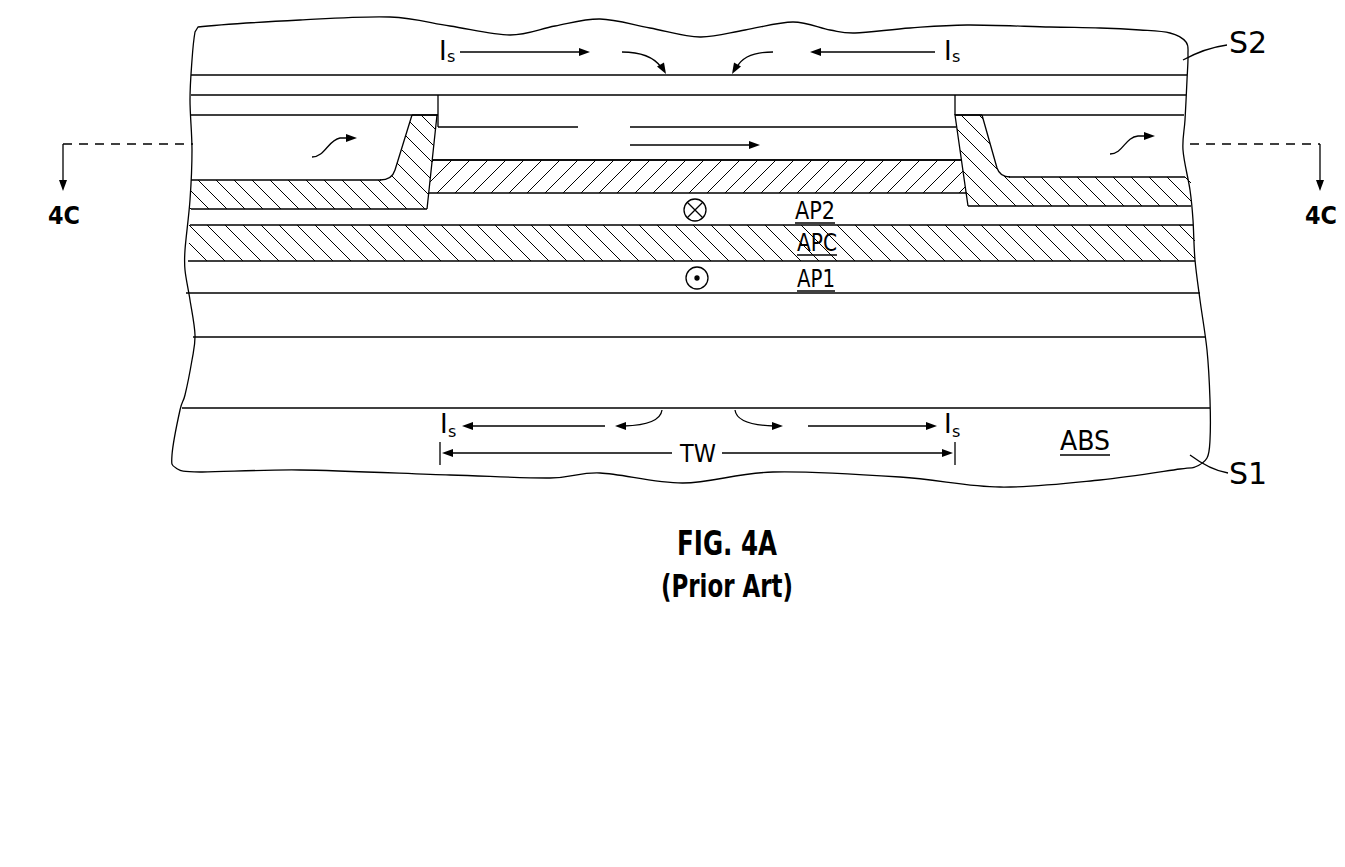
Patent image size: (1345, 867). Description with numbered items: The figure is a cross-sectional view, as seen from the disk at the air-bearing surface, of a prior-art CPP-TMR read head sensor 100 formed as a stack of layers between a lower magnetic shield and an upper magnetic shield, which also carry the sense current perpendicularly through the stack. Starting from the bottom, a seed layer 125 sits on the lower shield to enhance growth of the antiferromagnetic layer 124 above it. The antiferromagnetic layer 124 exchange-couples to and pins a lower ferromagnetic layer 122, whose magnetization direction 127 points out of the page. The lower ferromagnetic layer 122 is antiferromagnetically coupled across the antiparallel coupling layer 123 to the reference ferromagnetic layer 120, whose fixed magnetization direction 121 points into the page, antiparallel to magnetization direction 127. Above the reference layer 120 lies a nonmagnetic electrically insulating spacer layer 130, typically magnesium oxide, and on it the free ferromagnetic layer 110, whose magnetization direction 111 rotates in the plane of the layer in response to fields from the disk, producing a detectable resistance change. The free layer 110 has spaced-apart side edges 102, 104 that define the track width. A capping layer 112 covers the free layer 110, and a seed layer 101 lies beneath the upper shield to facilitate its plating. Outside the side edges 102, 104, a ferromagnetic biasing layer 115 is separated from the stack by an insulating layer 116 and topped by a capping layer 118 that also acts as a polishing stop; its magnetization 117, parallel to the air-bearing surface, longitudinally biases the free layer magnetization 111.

The sensor 100 is at (545, 95).
The seed layer 101 is at (966, 86).
The side edge of free layer 102 is at (437, 150).
The side edge of free layer 104 is at (960, 150).
The free ferromagnetic layer 110 is at (889, 158).
The magnetization direction of free layer 111 is at (650, 145).
The capping layer 112 is at (889, 123).
The ferromagnetic biasing layer 115 is at (195, 150).
The insulating layer 116 is at (200, 197).
The magnetization of biasing layer 117 is at (712, 155).
The capping layer 118 is at (200, 108).
The reference ferromagnetic layer 120 is at (889, 221).
The magnetization direction of reference layer 121 is at (708, 210).
The lower ferromagnetic layer 122 is at (889, 291).
The antiparallel coupling layer 123 is at (889, 255).
The antiferromagnetic layer 124 is at (889, 328).
The seed layer 125 is at (889, 388).
The magnetization direction of AP1 layer 127 is at (709, 278).
The nonmagnetic electrically insulating spacer layer 130 is at (889, 188).